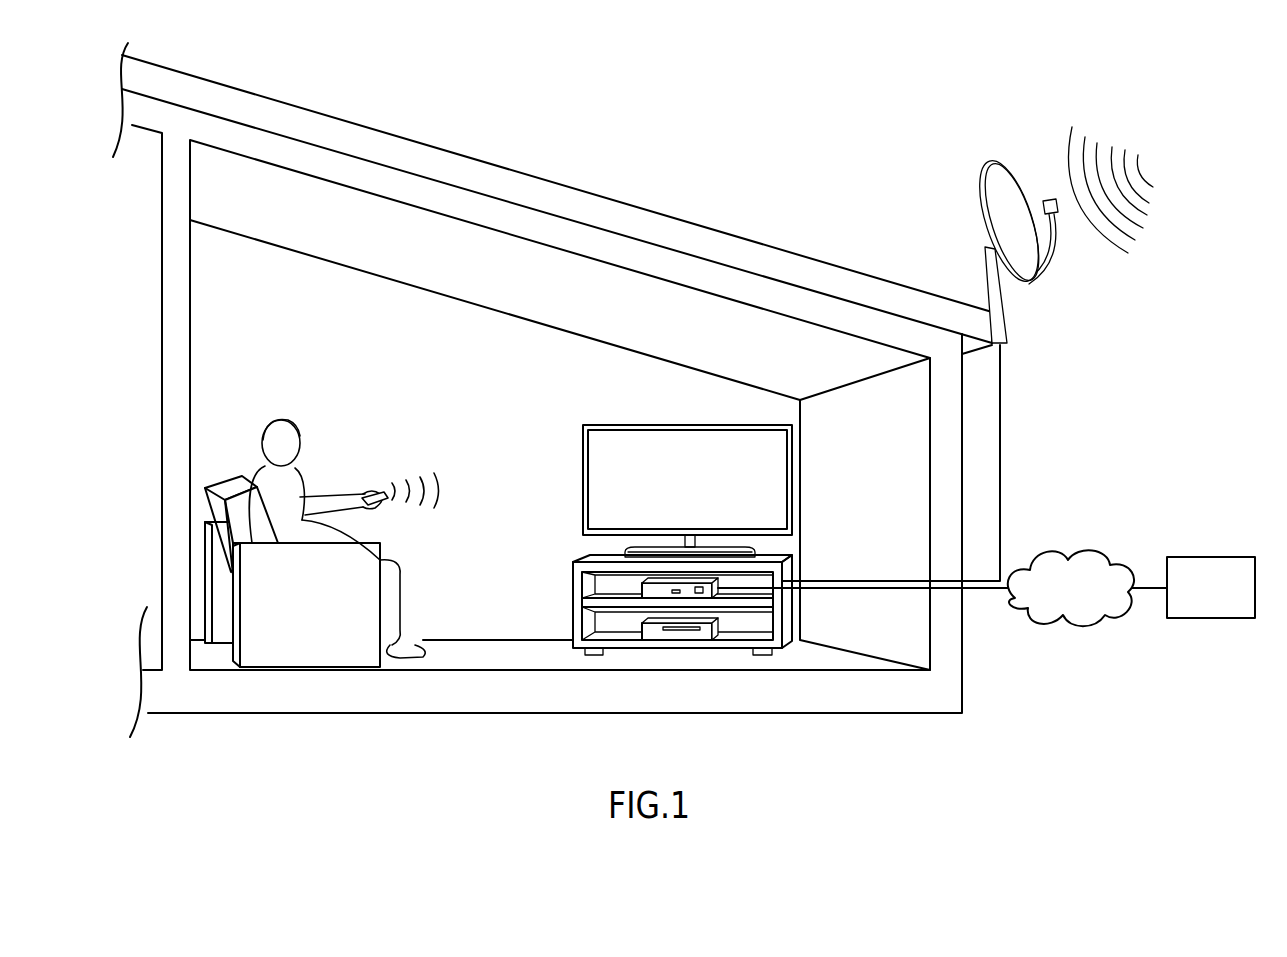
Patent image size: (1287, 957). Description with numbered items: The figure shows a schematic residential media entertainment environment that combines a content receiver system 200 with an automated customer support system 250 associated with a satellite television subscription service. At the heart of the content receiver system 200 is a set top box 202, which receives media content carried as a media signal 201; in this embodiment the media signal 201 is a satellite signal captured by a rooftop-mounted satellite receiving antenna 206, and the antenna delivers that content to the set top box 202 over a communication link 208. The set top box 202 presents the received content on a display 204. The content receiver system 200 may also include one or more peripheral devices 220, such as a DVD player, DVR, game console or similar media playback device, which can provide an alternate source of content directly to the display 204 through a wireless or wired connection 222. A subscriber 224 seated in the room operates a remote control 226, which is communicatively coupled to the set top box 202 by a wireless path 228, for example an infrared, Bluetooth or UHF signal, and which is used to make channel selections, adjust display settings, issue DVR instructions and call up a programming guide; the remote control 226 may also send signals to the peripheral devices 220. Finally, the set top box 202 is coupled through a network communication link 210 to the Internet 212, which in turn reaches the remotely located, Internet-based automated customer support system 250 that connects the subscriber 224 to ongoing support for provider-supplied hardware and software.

The content receiver system 200 is at (918, 72).
The media signal 201 is at (1124, 133).
The set top box 202 is at (640, 583).
The display 204 is at (670, 425).
The satellite receiving antenna 206 is at (1008, 182).
The communication link 208 is at (1000, 447).
The network communication link 210 is at (985, 597).
The internet 212 is at (1060, 543).
The peripheral device 220 is at (640, 623).
The wireless or wired connection 222 is at (583, 557).
The subscriber 224 is at (282, 418).
The remote control 226 is at (374, 491).
The wireless path 228 is at (445, 483).
The automated customer support system 250 is at (1210, 557).